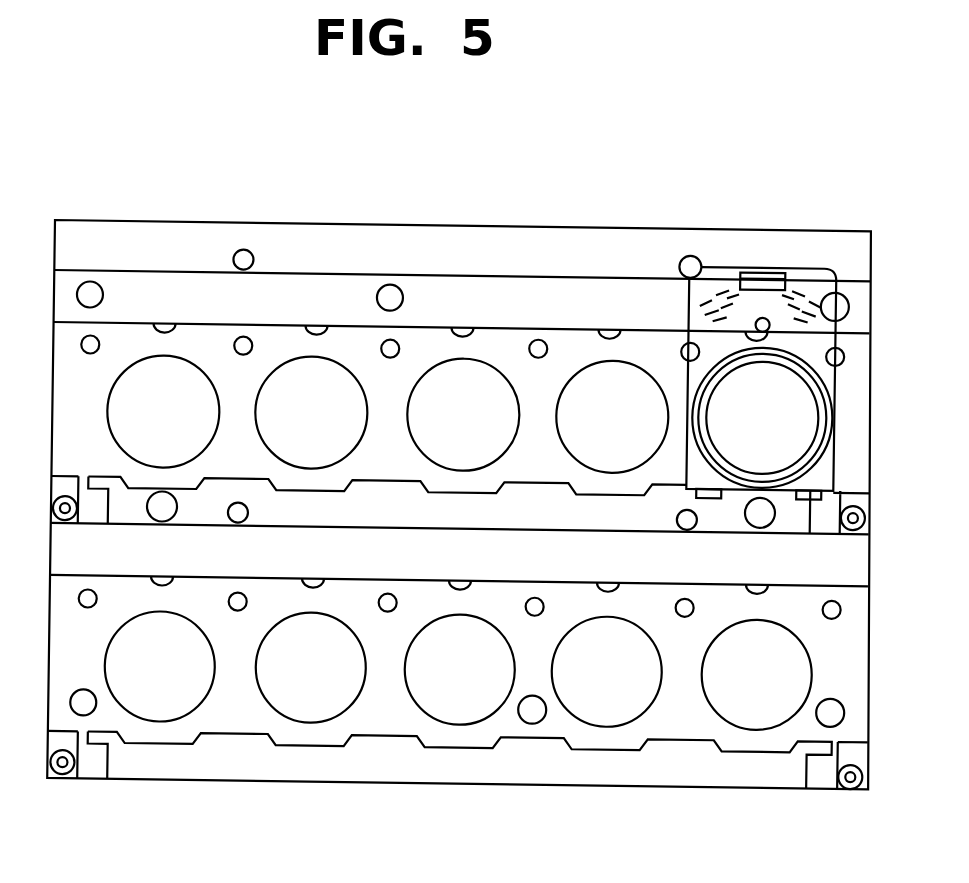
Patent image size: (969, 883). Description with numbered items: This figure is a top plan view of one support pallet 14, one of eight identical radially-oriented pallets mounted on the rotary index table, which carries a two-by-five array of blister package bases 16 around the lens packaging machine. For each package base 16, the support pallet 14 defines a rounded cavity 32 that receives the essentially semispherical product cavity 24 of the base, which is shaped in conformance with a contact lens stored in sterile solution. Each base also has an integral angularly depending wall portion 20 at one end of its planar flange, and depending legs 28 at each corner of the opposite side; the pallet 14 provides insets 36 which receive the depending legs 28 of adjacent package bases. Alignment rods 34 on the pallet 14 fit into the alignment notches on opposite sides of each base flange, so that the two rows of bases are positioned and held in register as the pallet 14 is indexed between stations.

The support pallet 14 is at (498, 220).
The blister package base 16 is at (842, 382).
The depending wall portion 20 is at (786, 258).
The cavity 24 is at (745, 424).
The depending legs 28 is at (704, 481).
The rounded cavity 32 is at (279, 446).
The alignment rods 34 is at (388, 338).
The insets 36 is at (530, 493).